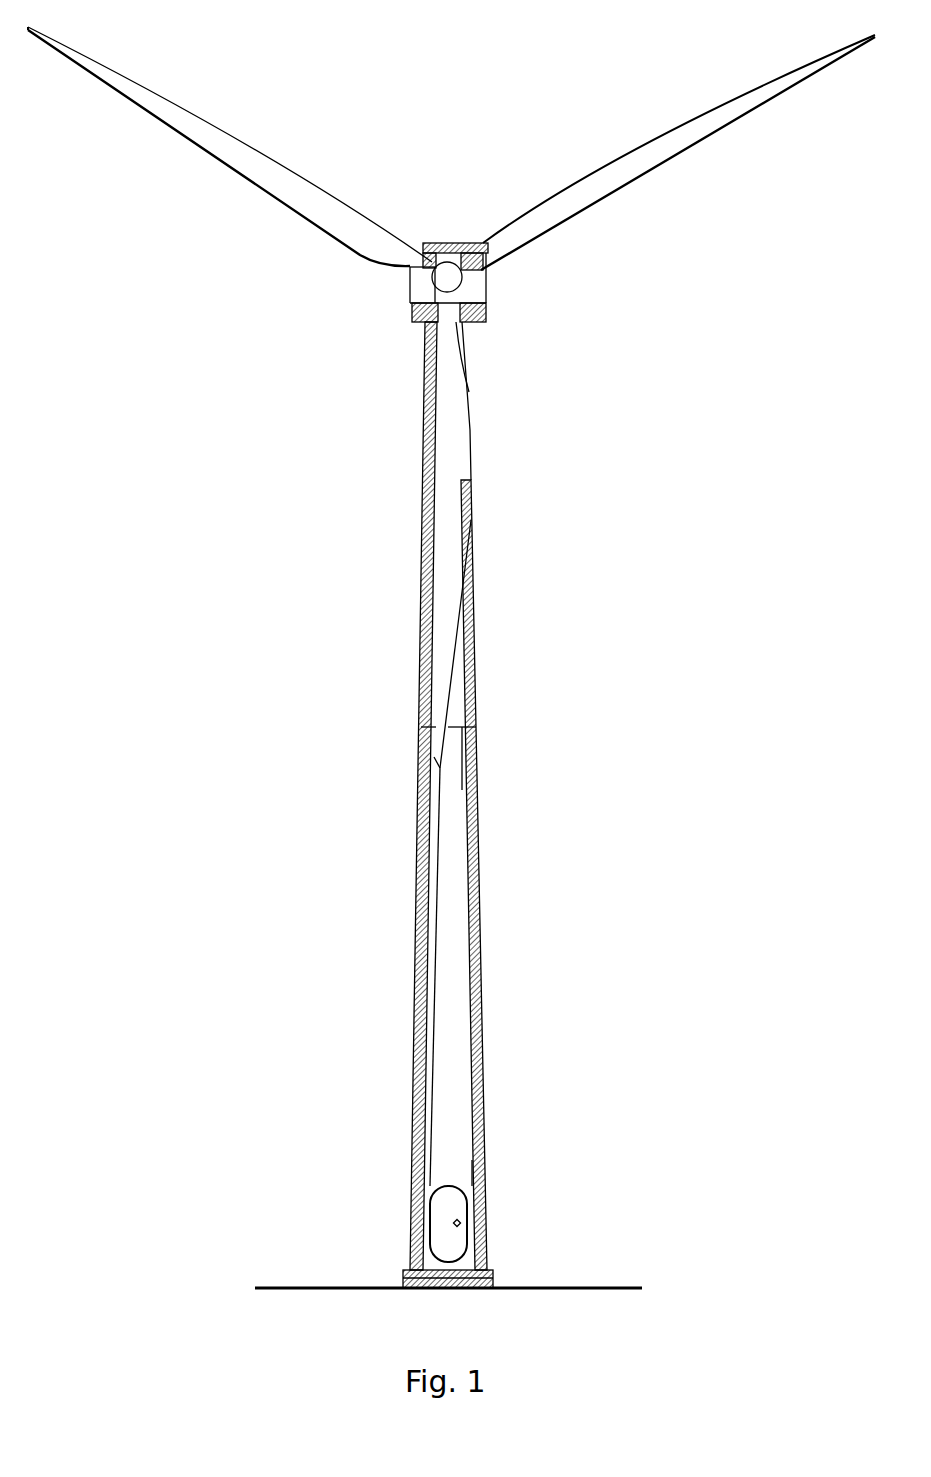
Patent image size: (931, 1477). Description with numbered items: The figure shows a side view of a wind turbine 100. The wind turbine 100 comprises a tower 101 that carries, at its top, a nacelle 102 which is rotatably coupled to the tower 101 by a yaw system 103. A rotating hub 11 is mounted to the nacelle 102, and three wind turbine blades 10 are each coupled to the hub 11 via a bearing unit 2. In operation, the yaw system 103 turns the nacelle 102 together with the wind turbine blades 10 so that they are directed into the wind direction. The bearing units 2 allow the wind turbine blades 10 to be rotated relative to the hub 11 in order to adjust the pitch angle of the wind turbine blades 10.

The wind turbine 100 is at (140, 193).
The wind turbine blade 10 is at (238, 162).
The nacelle 102 is at (442, 242).
The bearing unit 2 is at (440, 275).
The hub 11 is at (440, 278).
The yaw system 103 is at (478, 328).
The tower 101 is at (467, 900).